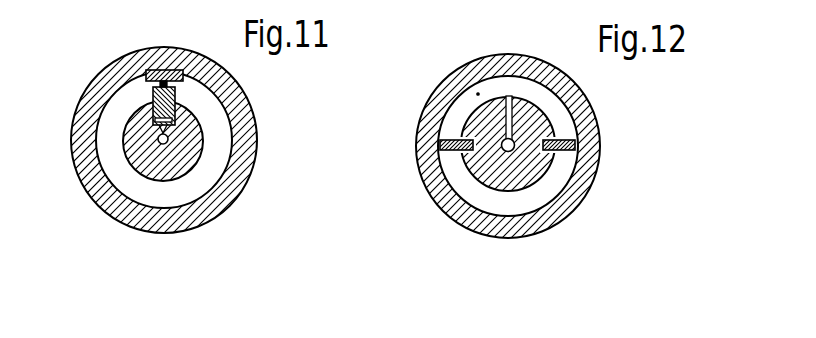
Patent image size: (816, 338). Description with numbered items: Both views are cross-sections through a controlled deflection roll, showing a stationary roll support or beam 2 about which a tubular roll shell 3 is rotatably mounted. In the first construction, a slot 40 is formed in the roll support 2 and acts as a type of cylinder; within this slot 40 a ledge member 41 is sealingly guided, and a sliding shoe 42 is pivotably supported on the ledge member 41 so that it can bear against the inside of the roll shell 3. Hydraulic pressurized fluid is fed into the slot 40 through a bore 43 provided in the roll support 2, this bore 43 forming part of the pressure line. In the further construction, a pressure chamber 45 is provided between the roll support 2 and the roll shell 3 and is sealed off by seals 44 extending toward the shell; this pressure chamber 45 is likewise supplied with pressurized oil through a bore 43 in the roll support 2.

In FIG. 11, the roll support 2 is at (200, 150).
In FIG. 12, the roll support 2 is at (533, 167).
In FIG. 11, the roll shell 3 is at (240, 116).
In FIG. 12, the roll shell 3 is at (583, 116).
In FIG. 11, the slot 40 is at (152, 121).
In FIG. 11, the ledge member 41 is at (152, 95).
In FIG. 11, the sliding shoe 42 is at (166, 70).
In FIG. 11, the bore 43 is at (158, 140).
In FIG. 12, the bore 43 is at (503, 151).
In FIG. 12, the seals 44 is at (442, 122).
In FIG. 12, the pressure chamber 45 is at (478, 94).